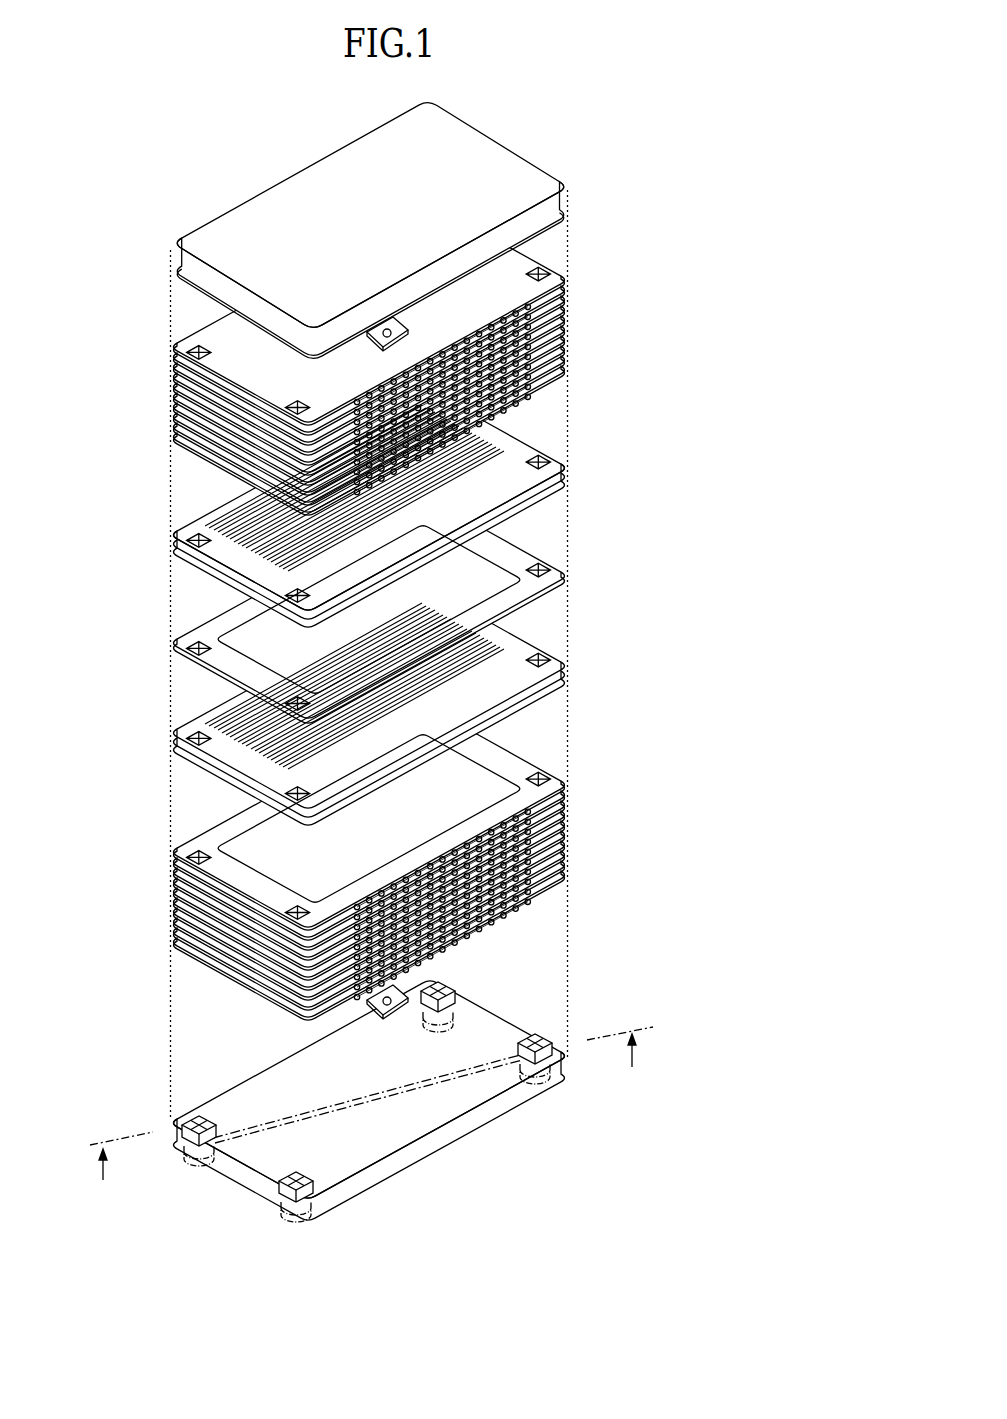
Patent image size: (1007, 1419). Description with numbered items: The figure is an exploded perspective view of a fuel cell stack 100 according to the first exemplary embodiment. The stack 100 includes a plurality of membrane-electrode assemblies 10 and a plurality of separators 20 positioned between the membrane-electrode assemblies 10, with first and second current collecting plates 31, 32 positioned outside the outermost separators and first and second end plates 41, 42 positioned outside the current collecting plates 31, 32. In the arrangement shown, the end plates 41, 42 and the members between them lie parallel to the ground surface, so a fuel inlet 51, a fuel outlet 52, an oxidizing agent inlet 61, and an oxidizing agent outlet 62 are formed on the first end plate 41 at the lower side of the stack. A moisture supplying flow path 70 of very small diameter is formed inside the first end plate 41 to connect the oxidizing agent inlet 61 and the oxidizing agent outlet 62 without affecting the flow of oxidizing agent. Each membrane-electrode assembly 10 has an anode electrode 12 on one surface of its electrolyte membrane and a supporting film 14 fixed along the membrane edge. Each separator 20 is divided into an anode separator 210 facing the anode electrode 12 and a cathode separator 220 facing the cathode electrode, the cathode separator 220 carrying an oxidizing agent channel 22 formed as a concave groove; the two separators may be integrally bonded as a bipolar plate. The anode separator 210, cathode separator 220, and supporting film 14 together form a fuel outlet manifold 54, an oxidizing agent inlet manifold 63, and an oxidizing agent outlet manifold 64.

The fuel cell stack 100 is at (200, 127).
The second end plate 42 is at (552, 183).
The second current collecting plate 32 is at (566, 230).
The oxidizing agent outlet manifold 64 is at (545, 450).
The cathode separator 220 is at (569, 471).
The anode separator 210 is at (569, 488).
The separator 20 is at (422, 523).
The oxidizing agent channel 22 is at (388, 622).
The oxidizing agent inlet manifold 63 is at (190, 540).
The fuel outlet manifold 54 is at (290, 596).
The supporting film 14 is at (541, 576).
The anode electrode 12 is at (530, 590).
The membrane-electrode assembly 10 is at (170, 655).
The first current collecting plate 31 is at (566, 880).
The fuel inlet 51 is at (440, 988).
The oxidizing agent inlet 61 is at (190, 1125).
The oxidizing agent outlet 62 is at (537, 1075).
The first end plate 41 is at (452, 1130).
The moisture supplying flow path 70 is at (376, 1102).
The fuel outlet 52 is at (290, 1200).